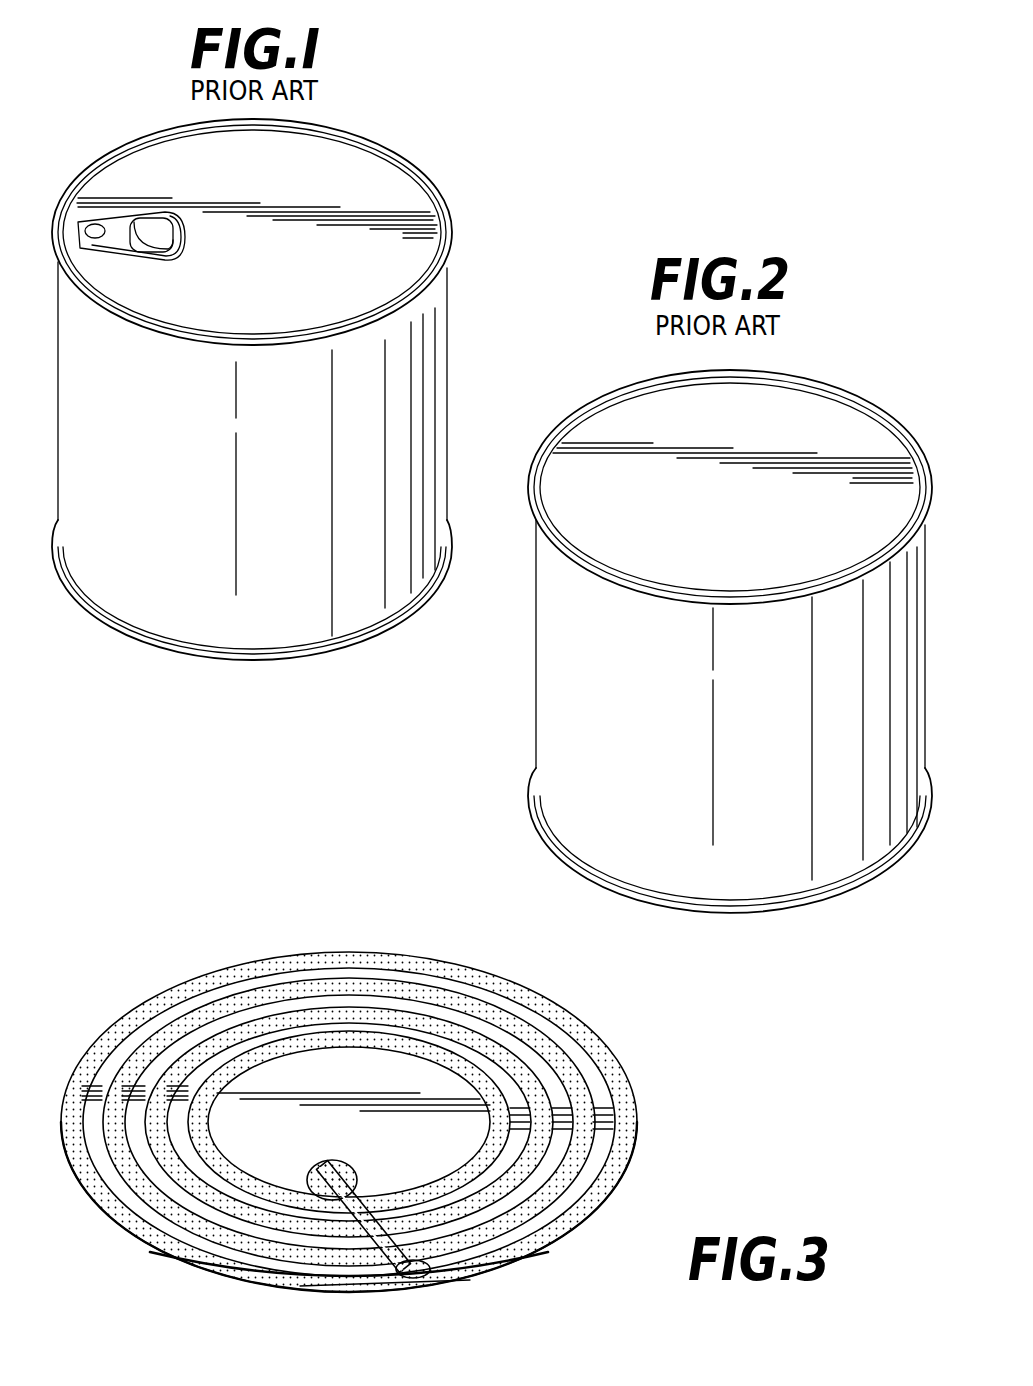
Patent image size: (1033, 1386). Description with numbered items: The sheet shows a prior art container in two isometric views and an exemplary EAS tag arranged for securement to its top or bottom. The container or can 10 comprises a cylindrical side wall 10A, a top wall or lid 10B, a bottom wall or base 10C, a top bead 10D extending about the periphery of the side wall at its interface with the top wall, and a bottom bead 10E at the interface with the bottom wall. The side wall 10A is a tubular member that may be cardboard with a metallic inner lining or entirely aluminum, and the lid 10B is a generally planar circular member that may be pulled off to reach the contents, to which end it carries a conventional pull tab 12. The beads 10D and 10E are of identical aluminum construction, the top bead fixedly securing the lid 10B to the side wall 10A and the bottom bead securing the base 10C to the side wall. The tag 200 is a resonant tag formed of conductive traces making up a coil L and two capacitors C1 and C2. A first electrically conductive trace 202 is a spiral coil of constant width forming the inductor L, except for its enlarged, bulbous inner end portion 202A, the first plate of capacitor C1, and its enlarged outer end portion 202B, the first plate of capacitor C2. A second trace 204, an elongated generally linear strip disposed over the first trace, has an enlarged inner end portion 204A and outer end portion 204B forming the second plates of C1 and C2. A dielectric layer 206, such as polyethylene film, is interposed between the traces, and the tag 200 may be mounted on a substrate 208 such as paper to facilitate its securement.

In FIG. 1, the container or can 10 is at (458, 296).
In FIG. 2, the container or can 10 is at (826, 380).
In FIG. 1, the side wall 10A is at (427, 400).
In FIG. 2, the side wall 10A is at (562, 628).
In FIG. 1, the top wall or lid 10B is at (363, 180).
In FIG. 2, the bottom wall or base 10C is at (627, 432).
In FIG. 1, the top bead 10D is at (445, 202).
In FIG. 2, the top bead 10D is at (793, 902).
In FIG. 1, the bottom bead 10E is at (183, 657).
In FIG. 2, the bottom bead 10E is at (883, 415).
In FIG. 1, the pull tab 12 is at (137, 212).
In FIG. 3, the EAS tag 200 is at (124, 1005).
In FIG. 3, the coil L is at (275, 963).
In FIG. 3, the first electrically conductive trace 202 is at (542, 1007).
In FIG. 3, the end portion 202A is at (337, 1153).
In FIG. 3, the end portion 202B is at (383, 1284).
In FIG. 3, the second electrically conductive trace 204 is at (363, 1287).
In FIG. 3, the end portion 204A is at (305, 1184).
In FIG. 3, the end portion 204B is at (430, 1267).
In FIG. 3, the dielectric layer 206 is at (323, 1255).
In FIG. 3, the substrate 208 is at (607, 1207).
In FIG. 3, the first capacitor C1 is at (353, 1168).
In FIG. 3, the second capacitor C2 is at (450, 1280).